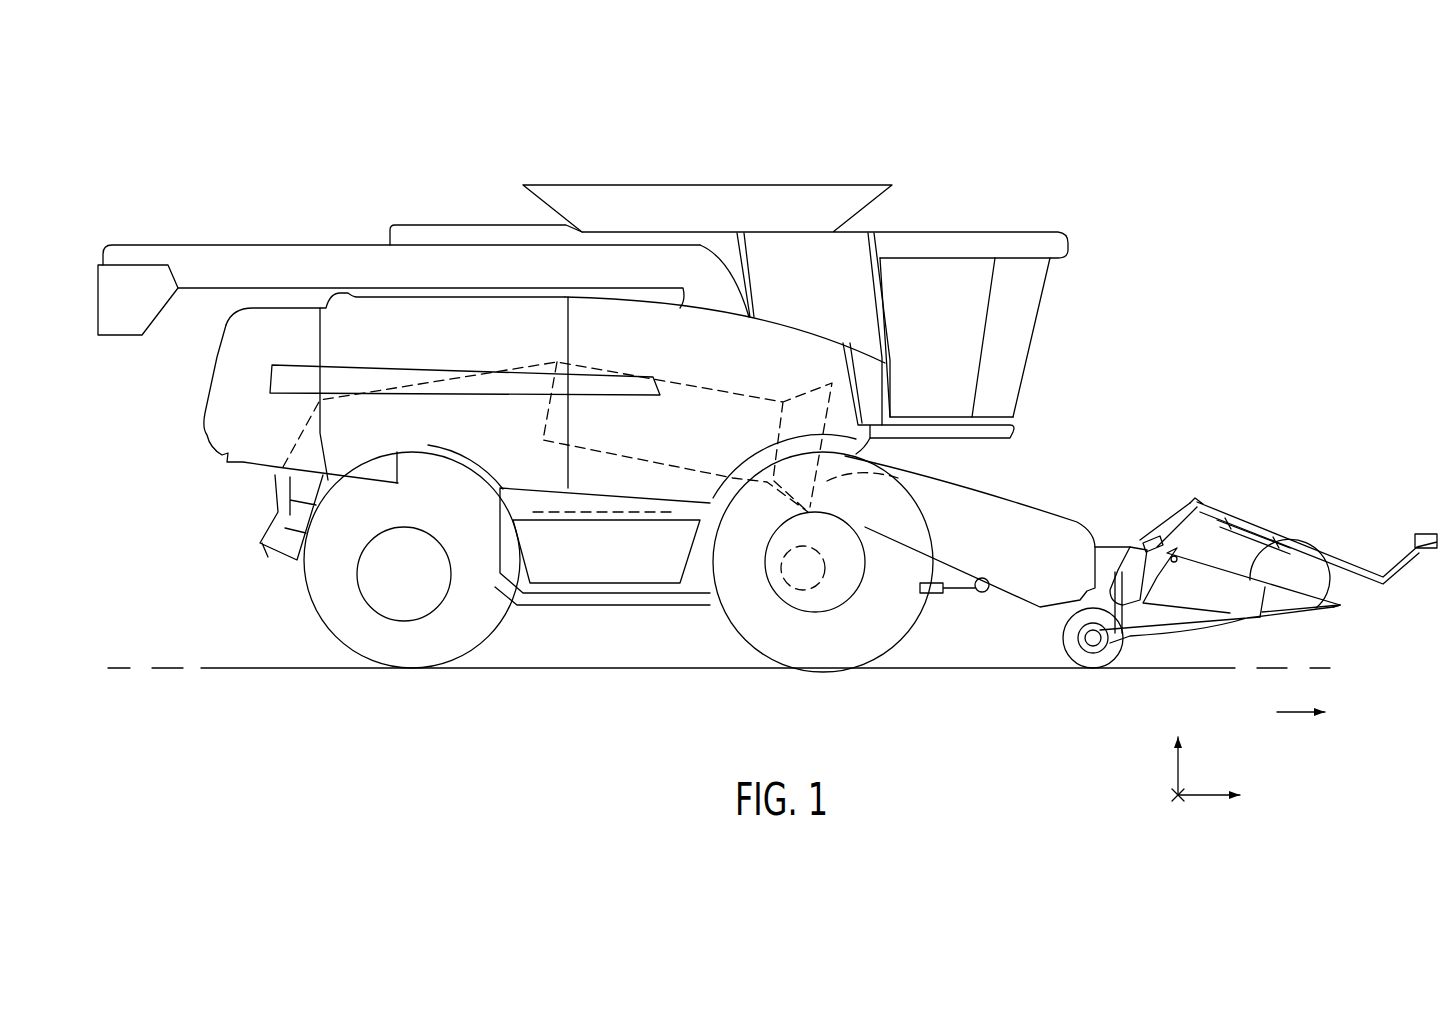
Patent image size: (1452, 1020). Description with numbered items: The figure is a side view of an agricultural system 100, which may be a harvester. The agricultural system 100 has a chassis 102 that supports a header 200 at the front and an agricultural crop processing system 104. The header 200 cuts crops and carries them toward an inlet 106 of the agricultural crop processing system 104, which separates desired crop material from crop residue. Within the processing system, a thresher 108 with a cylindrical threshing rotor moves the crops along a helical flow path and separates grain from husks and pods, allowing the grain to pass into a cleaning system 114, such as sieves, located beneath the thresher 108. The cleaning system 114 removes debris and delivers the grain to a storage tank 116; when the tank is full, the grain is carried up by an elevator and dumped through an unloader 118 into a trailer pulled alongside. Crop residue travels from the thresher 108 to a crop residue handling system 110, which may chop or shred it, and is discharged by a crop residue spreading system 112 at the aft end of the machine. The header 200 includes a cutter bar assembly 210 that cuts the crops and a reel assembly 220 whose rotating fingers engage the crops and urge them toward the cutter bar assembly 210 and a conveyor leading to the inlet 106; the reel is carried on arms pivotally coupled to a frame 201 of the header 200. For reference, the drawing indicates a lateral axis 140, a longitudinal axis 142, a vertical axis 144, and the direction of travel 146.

The agricultural system 100 is at (1070, 142).
The chassis 102 is at (547, 609).
The agricultural crop processing system 104 is at (690, 360).
The inlet 106 is at (900, 468).
The thresher 108 is at (683, 393).
The crop residue handling system 110 is at (370, 352).
The crop residue spreading system 112 is at (260, 527).
The cleaning system 114 is at (576, 519).
The storage tank 116 is at (634, 589).
The unloader 118 is at (238, 243).
The lateral axis 140 is at (1176, 795).
The longitudinal axis 142 is at (1207, 796).
The vertical axis 144 is at (1177, 767).
The direction of travel 146 is at (1300, 712).
The header 200 is at (1250, 550).
The frame 201 is at (1135, 560).
The cutter bar assembly 210 is at (1325, 625).
The reel assembly 220 is at (1305, 532).